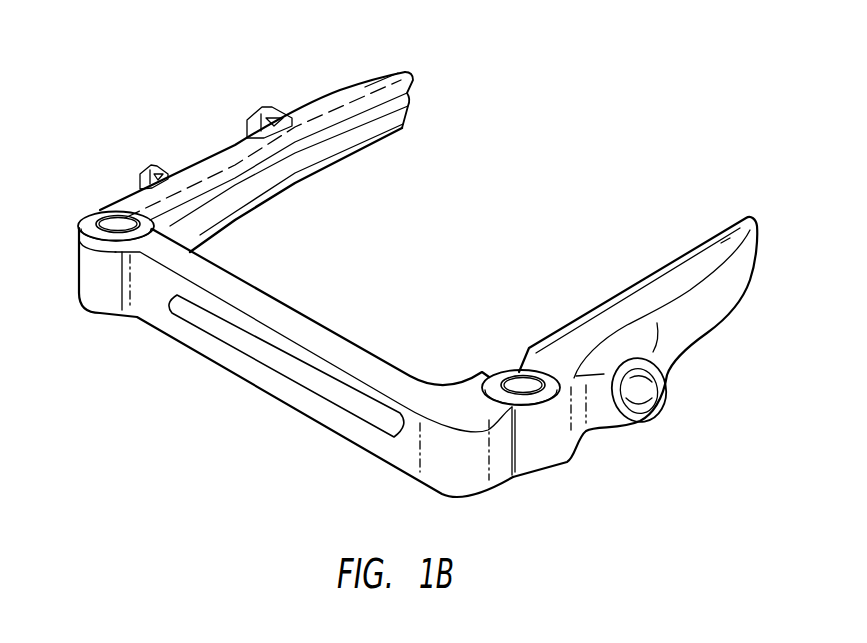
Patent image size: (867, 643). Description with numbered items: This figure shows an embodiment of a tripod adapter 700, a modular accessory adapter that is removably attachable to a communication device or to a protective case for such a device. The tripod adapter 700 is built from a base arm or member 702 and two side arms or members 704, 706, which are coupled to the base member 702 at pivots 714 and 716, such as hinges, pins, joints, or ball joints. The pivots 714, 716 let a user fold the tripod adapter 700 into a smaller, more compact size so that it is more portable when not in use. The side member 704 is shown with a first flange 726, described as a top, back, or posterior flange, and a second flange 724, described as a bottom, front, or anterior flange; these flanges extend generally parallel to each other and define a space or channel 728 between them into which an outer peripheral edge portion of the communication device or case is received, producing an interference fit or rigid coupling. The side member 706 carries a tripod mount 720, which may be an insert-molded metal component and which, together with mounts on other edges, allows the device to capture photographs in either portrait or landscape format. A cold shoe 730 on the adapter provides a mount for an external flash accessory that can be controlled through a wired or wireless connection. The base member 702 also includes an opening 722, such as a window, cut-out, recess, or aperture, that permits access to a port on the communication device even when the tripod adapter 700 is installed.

The tripod adapter 700 is at (192, 398).
The base arm or member 702 is at (315, 320).
The side arm or member 704 is at (283, 192).
The side arm or member 706 is at (680, 253).
The pivot 714 is at (95, 215).
The pivot 716 is at (498, 361).
The tripod mount 720 is at (653, 400).
The opening 722 is at (292, 360).
The second flange 724 is at (365, 155).
The first flange 726 is at (398, 80).
The space or channel 728 is at (393, 117).
The cold shoe 730 is at (247, 120).